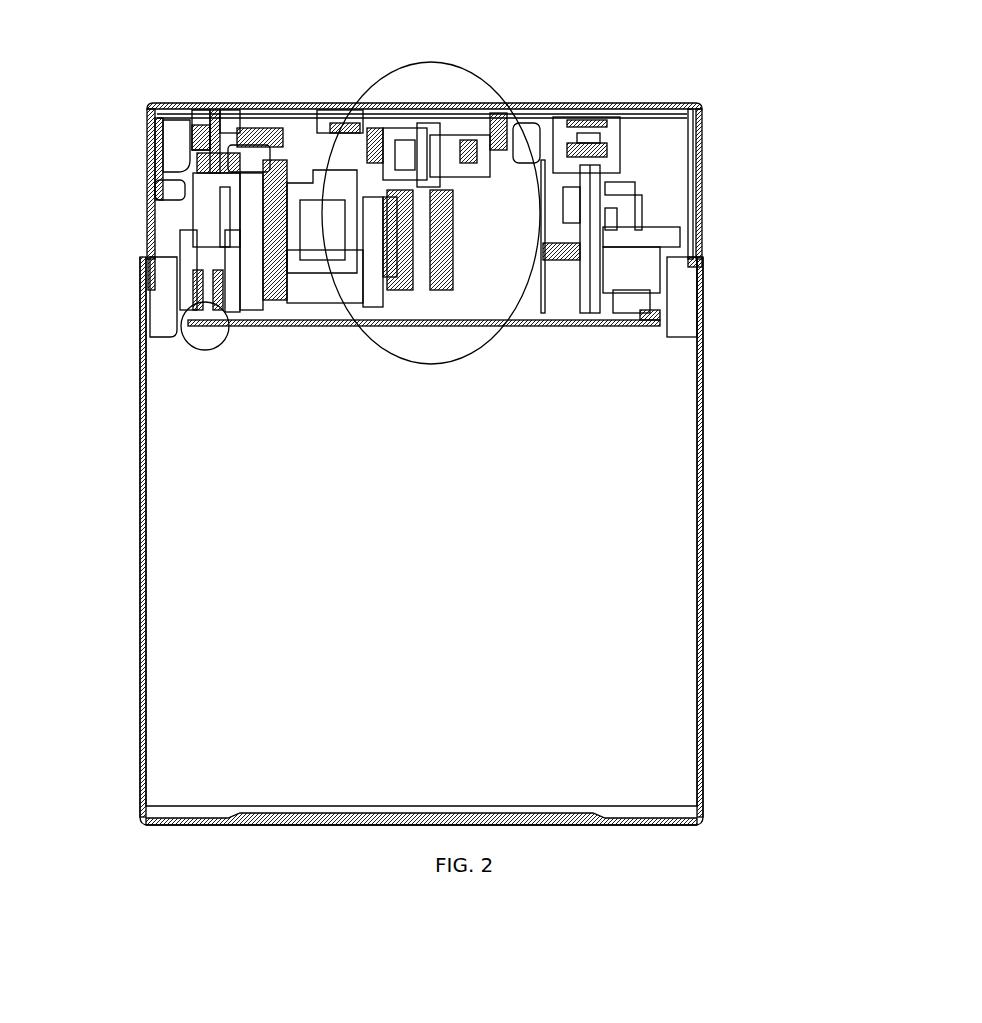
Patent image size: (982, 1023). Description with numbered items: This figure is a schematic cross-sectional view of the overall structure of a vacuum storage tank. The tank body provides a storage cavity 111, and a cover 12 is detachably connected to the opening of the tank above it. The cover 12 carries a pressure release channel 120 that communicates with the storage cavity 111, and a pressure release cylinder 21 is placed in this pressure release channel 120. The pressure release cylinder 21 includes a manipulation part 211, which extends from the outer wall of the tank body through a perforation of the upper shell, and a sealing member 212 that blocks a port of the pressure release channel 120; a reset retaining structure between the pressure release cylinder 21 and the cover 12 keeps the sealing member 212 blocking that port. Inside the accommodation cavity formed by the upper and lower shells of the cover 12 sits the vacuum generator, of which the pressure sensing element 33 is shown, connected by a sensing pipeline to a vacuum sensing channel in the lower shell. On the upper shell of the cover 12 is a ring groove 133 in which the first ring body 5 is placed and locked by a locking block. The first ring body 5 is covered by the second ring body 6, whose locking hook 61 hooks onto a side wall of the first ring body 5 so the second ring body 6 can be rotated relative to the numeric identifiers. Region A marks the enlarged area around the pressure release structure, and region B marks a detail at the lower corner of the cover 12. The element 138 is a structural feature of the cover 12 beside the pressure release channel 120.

The second ring body 6 is at (207, 103).
The first ring body 5 is at (220, 112).
The locking hook 61 is at (215, 140).
The sealing member 212 is at (278, 116).
The manipulation part 211 is at (392, 112).
The pressure release cylinder 21 is at (455, 160).
The ring groove 133 is at (608, 140).
The pressure release channel 120 is at (450, 248).
The cover 12 is at (665, 268).
The post 138 is at (605, 257).
The pressure sensing element 33 is at (260, 252).
The storage cavity 111 is at (538, 684).
The region A is at (408, 368).
The region B is at (190, 344).